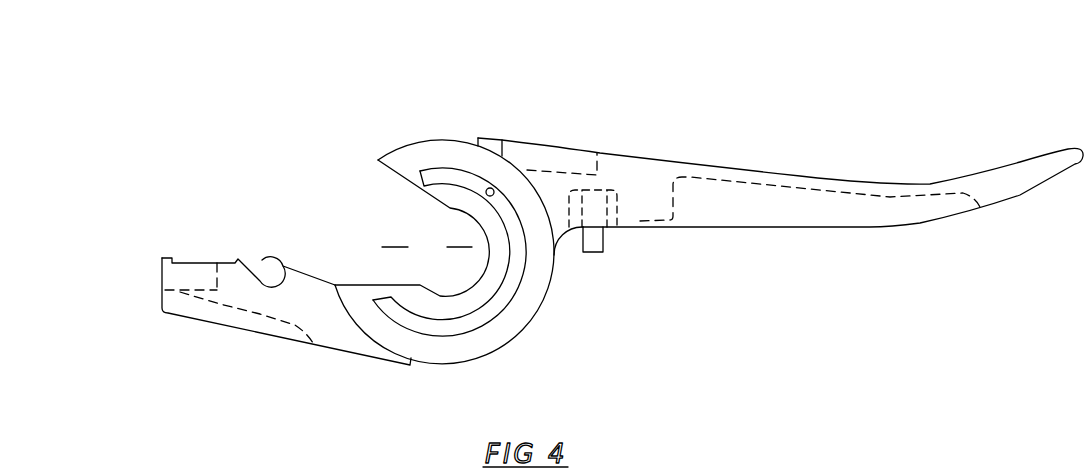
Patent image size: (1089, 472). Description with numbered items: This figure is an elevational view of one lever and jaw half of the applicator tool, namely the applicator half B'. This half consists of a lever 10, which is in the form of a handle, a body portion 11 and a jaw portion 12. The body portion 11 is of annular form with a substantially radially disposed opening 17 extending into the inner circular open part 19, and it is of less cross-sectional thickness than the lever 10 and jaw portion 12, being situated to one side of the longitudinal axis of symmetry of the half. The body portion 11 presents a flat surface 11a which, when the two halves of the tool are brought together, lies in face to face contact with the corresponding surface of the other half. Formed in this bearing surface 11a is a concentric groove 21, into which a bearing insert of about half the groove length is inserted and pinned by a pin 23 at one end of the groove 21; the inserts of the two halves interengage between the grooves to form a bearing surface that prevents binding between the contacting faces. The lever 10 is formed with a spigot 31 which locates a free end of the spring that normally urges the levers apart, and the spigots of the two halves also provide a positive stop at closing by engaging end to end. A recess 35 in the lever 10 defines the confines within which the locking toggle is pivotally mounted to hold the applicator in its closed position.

The lever 10 is at (875, 188).
The body portion 11 is at (518, 323).
The flat surface 11a is at (540, 270).
The jaw portion 12 is at (228, 320).
The radially disposed opening 17 is at (377, 222).
The inner circular open part 19 is at (427, 249).
The concentric groove 21 is at (455, 328).
The pin 23 is at (493, 189).
The spigot 31 is at (602, 252).
The recess 35 is at (598, 153).
The applicator half B' is at (745, 99).